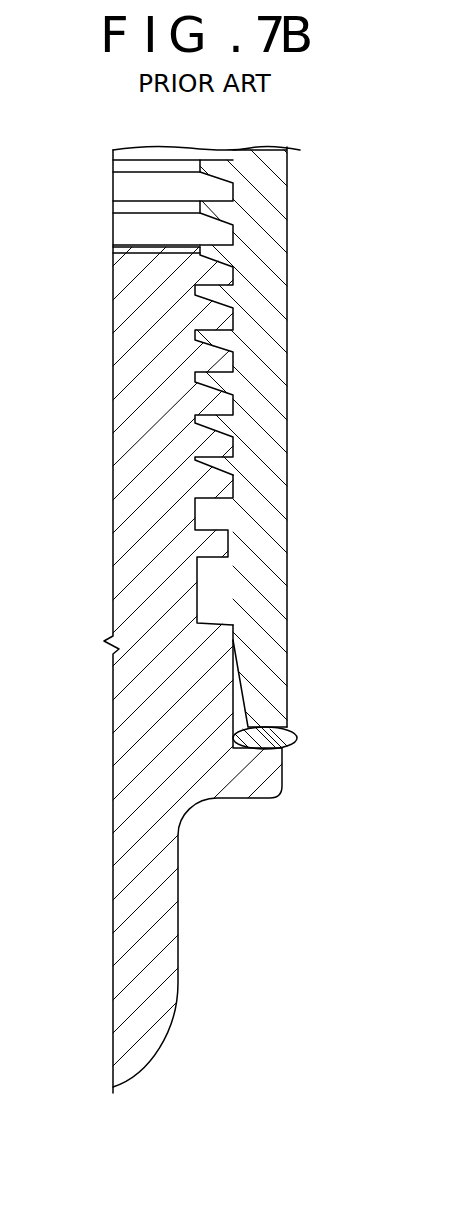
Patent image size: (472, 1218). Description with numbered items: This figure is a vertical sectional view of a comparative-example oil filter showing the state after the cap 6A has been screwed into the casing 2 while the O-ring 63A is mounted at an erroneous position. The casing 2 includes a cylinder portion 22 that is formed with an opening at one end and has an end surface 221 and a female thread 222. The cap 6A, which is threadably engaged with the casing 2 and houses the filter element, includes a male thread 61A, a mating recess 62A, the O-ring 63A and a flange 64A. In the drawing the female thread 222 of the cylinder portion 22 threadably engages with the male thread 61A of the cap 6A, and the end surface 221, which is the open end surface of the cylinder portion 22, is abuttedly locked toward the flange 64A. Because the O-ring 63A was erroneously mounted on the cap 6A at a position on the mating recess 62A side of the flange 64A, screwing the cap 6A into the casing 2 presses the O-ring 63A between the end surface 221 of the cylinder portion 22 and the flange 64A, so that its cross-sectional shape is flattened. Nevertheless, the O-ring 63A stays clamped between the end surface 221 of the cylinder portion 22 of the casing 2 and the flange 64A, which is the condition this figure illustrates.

The casing 2 is at (290, 181).
The cylinder portion 22 is at (265, 329).
The female thread 222 is at (288, 248).
The end surface 221 is at (289, 727).
The cap 6A is at (150, 413).
The male thread 61A is at (210, 360).
The mating recess 62A is at (232, 562).
The O-ring 63A is at (297, 741).
The flange 64A is at (248, 773).